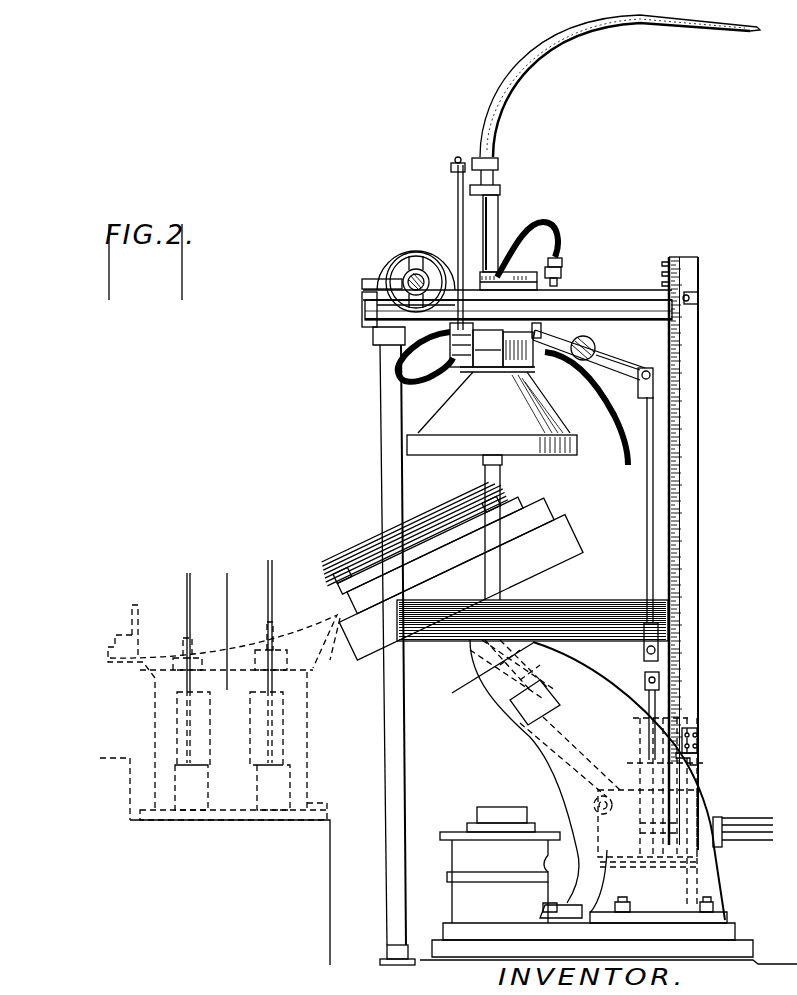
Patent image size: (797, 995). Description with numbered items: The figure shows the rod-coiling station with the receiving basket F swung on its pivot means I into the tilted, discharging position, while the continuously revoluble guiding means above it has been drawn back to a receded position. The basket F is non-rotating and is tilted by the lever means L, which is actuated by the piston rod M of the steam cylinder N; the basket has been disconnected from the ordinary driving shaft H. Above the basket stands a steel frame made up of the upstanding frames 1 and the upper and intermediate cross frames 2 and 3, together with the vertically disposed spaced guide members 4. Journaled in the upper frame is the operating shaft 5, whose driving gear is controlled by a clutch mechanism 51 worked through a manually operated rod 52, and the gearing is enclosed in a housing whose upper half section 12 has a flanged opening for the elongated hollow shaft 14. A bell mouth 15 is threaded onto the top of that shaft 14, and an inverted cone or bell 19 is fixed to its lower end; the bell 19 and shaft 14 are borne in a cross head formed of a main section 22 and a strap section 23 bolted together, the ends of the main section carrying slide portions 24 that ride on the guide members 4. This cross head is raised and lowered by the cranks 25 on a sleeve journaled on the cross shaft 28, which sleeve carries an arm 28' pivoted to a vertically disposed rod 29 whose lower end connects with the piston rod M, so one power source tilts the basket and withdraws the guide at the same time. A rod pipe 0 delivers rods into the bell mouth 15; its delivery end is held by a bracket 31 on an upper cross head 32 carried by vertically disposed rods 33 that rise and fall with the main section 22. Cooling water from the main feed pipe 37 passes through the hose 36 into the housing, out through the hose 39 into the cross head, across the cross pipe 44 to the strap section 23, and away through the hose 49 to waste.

The rod pipe 0 is at (503, 97).
The upstanding frame 1 is at (690, 418).
The upper cross frame 2 is at (618, 312).
The mediately placed cross frame 3 is at (532, 553).
The vertically disposed spaced guide member 4 is at (720, 298).
The operating shaft 5 is at (410, 274).
The upper half section of gear housing 12 is at (425, 248).
The elongated hollow shaft 14 is at (498, 212).
The bell mouth 15 is at (500, 188).
The inverted cone or bell 19 is at (492, 418).
The main section of cross head 22 is at (455, 367).
The strap section of cross head 23 is at (532, 365).
The slide portion 24 is at (488, 367).
The crank 25 is at (558, 330).
The cross shaft 28 is at (600, 341).
The arm 28' is at (629, 354).
The vertically disposed rod 29 is at (647, 510).
The bracket 31 is at (498, 161).
The cross head 32 is at (451, 168).
The vertically disposed rod 33 is at (458, 200).
The hose 36 is at (553, 226).
The main feed pipe 37 is at (562, 270).
The hose 39 is at (398, 376).
The cross pipe 44 is at (525, 310).
The hose 49 is at (622, 392).
The clutch mechanism 51 is at (372, 272).
The manually operated rod 52 is at (690, 292).
The receiving basket F is at (355, 660).
The guide G is at (218, 762).
The driving shaft H is at (560, 878).
The pivot means I is at (497, 678).
The lever means L is at (570, 762).
The piston rod M is at (660, 700).
The steam cylinder N is at (683, 795).